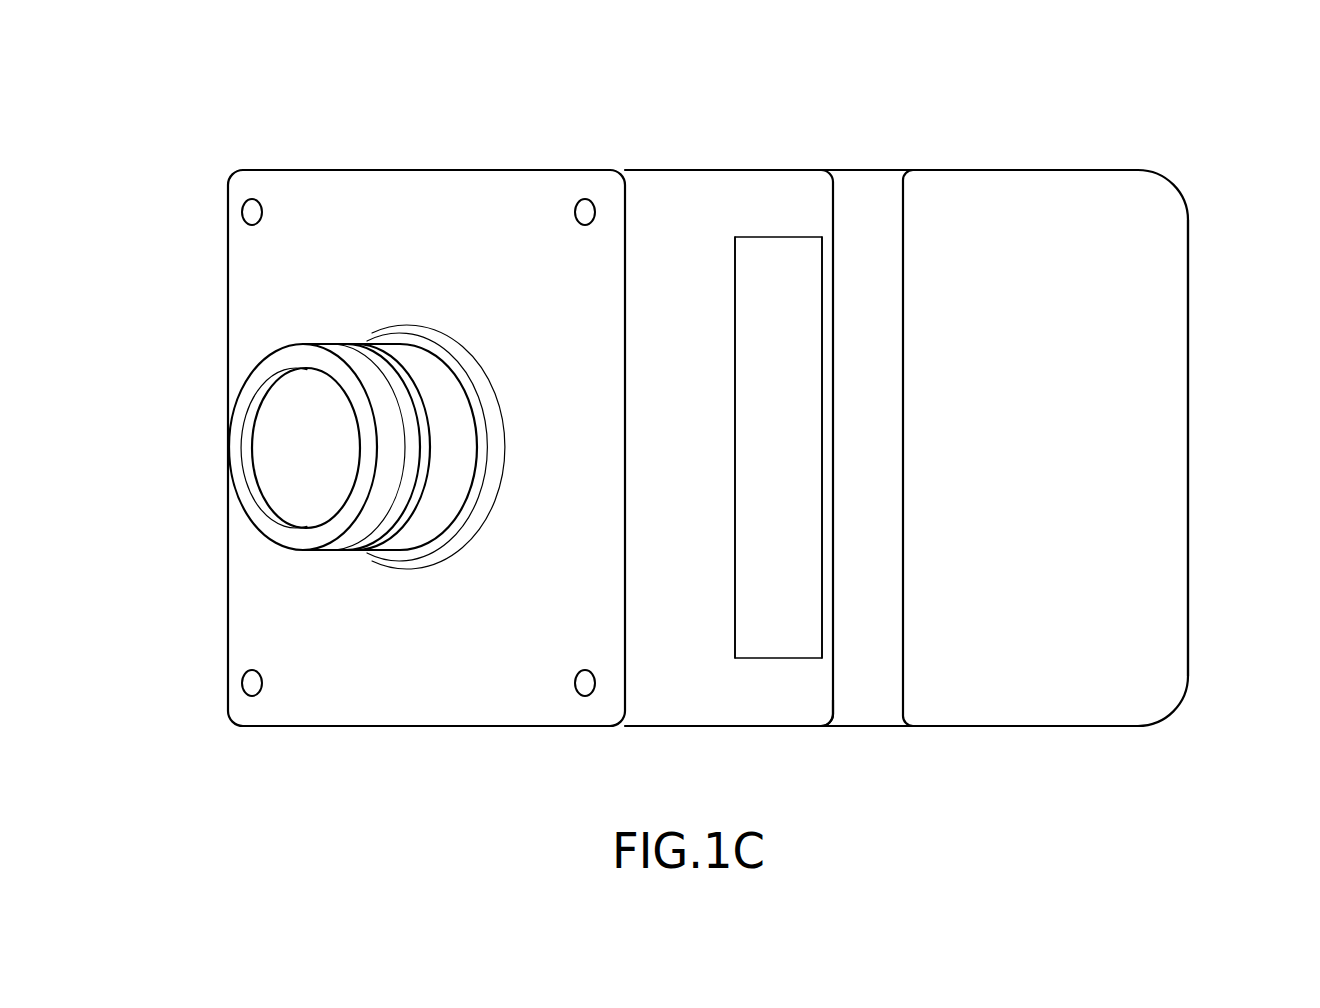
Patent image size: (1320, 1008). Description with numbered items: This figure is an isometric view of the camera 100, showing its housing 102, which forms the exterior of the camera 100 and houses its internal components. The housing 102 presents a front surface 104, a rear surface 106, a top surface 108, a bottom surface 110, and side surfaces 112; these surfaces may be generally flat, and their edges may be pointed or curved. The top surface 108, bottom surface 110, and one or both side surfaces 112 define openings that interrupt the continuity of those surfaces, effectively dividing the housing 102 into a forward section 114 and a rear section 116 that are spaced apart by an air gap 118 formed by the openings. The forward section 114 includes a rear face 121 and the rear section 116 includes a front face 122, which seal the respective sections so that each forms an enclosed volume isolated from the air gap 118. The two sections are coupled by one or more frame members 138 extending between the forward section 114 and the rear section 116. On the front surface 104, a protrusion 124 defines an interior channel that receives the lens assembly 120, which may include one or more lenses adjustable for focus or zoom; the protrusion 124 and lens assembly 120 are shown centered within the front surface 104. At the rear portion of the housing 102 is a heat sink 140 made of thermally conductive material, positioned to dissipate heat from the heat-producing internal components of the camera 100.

The camera 100 is at (210, 140).
The housing 102 is at (772, 775).
The front surface 104 is at (262, 612).
The rear surface 106 is at (1188, 355).
The top surface 108 is at (423, 168).
The bottom surface 110 is at (350, 728).
The side surfaces 112 is at (988, 182).
The forward section 114 is at (460, 748).
The rear section 116 is at (958, 773).
The air gap 118 is at (765, 588).
The lens assembly 120 is at (262, 453).
The rear face 121 is at (735, 292).
The front face 122 is at (820, 275).
The protrusion 124 is at (341, 350).
The frame member 138 is at (807, 712).
The heat sink 140 is at (1097, 170).